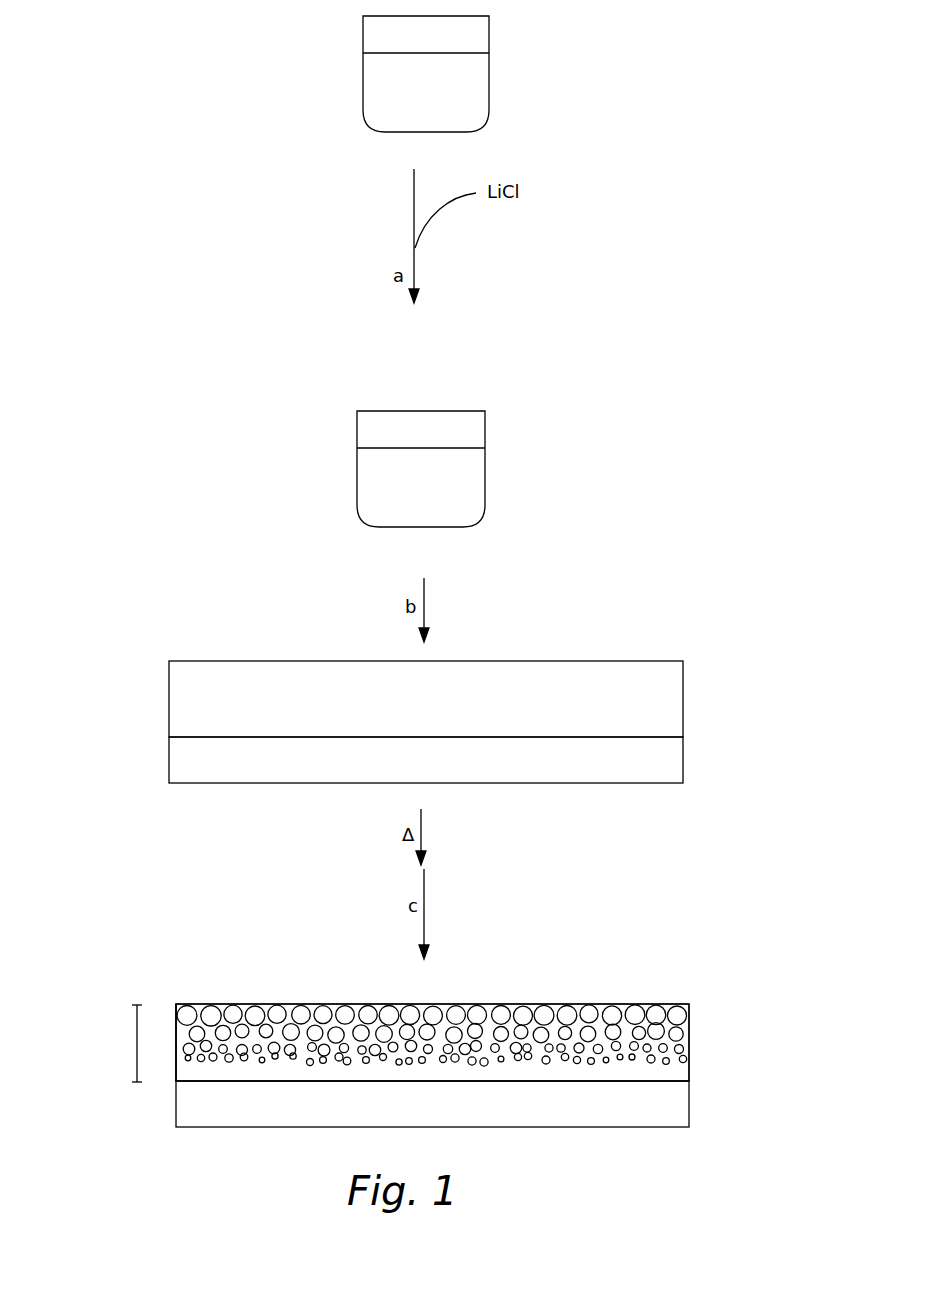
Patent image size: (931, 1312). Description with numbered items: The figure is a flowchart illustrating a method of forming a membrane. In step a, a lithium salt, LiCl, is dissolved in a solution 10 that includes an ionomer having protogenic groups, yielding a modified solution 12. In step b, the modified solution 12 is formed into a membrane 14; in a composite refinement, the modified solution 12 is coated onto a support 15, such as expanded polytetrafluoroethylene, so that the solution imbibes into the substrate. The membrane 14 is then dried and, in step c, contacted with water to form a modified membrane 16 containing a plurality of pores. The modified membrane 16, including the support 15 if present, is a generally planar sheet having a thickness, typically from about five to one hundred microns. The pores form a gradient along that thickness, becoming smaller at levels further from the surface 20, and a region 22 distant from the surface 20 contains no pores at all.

The solution 10 is at (362, 96).
The modified solution 12 is at (370, 483).
The membrane 14 is at (190, 663).
The support 15 is at (172, 763).
The modified membrane 16 is at (176, 1005).
The surface 20 is at (517, 1003).
The region 22 is at (675, 1074).